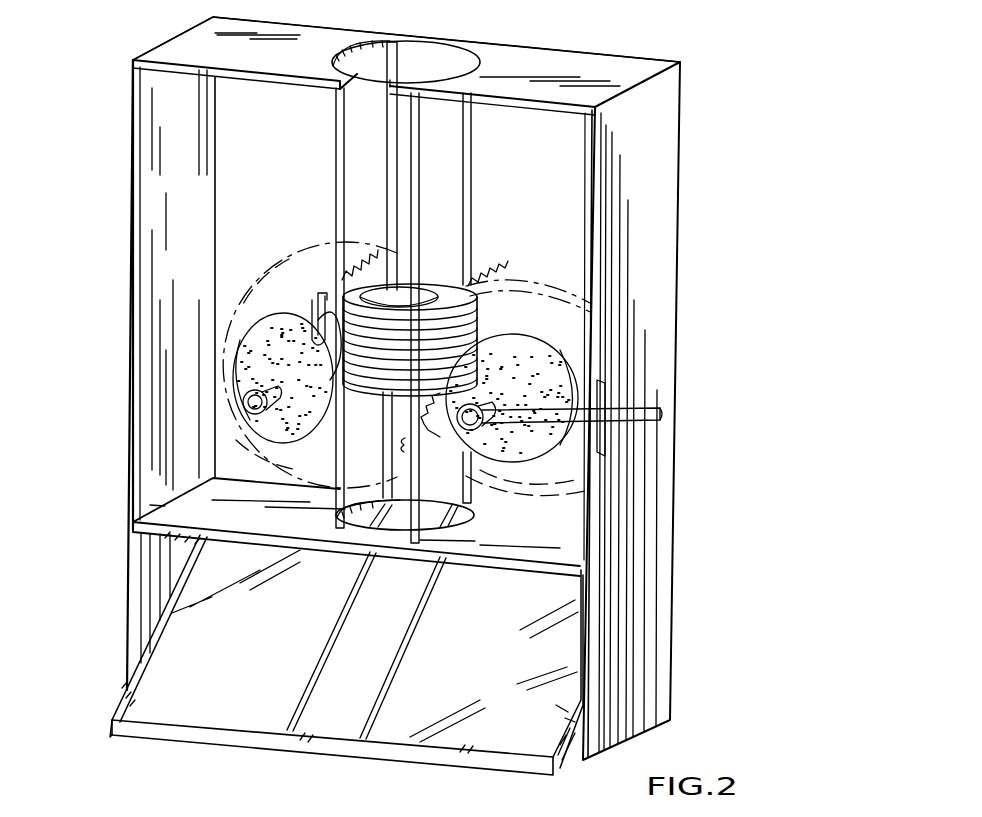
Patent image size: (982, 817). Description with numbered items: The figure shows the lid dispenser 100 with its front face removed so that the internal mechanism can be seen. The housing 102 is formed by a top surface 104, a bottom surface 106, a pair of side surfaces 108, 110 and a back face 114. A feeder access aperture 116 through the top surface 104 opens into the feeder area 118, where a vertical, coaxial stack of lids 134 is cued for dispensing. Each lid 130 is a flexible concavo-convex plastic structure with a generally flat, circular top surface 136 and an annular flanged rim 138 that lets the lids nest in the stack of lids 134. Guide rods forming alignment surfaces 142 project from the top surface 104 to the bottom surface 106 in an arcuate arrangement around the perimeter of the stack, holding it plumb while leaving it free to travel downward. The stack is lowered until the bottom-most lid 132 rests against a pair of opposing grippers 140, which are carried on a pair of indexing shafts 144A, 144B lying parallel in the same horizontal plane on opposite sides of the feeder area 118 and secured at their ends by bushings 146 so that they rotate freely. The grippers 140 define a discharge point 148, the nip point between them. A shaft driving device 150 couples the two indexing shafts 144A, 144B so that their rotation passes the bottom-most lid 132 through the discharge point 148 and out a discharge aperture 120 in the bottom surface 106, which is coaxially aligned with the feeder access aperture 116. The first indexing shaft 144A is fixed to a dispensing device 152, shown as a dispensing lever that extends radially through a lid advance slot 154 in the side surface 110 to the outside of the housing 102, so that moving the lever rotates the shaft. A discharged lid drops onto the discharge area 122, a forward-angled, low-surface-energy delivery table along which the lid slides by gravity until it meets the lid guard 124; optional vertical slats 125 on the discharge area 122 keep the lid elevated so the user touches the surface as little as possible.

The dispenser 100 is at (714, 118).
The housing 102 is at (133, 110).
The top surface 104 is at (197, 47).
The bottom surface 106 is at (180, 534).
The side surface 108 is at (133, 355).
The side surface 110 is at (662, 268).
The back face 114 is at (560, 168).
The feeder access aperture 116 is at (428, 64).
The feeder area 118 is at (366, 200).
The discharge aperture 120 is at (393, 524).
The discharge area 122 is at (187, 663).
The lid guard 124 is at (257, 735).
The vertical slats 125 is at (320, 645).
The lid 130 is at (433, 278).
The bottom-most lid 132 is at (372, 394).
The stack of lids 134 is at (312, 330).
The top surface 136 is at (348, 314).
The annular flanged rim 138 is at (347, 318).
The grippers 140 is at (265, 358).
The alignment surface 142 is at (388, 134).
The first indexing shaft 144A is at (490, 450).
The second indexing shaft 144B is at (283, 396).
The bushings 146 is at (250, 402).
The discharge point 148 is at (402, 405).
The shaft driving device 150 is at (268, 291).
The dispensing device 152 is at (660, 410).
The lid advance slot 154 is at (610, 442).